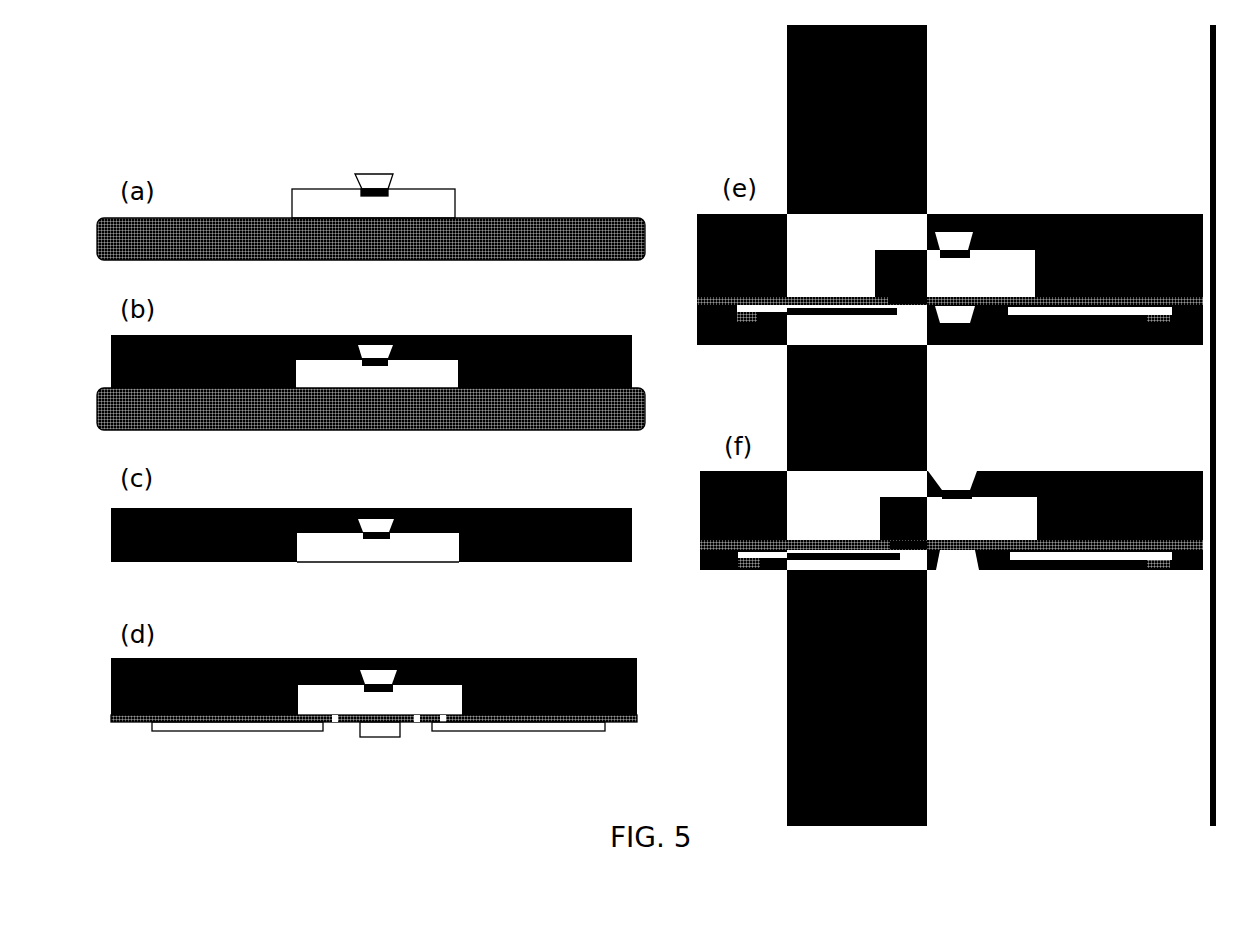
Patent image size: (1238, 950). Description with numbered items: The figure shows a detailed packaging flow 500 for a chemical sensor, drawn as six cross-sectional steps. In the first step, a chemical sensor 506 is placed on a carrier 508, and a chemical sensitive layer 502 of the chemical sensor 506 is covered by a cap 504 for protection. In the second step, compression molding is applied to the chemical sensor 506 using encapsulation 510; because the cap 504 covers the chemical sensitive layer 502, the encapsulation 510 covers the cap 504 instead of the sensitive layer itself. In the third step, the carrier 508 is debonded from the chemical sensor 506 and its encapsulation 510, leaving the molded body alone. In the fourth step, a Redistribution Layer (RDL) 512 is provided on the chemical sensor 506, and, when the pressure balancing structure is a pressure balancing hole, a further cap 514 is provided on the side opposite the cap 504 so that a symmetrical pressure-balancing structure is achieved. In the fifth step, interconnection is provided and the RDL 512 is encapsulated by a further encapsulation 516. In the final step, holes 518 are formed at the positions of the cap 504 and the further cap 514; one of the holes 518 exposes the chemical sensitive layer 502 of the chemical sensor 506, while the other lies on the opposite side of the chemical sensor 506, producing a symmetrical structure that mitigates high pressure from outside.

The packaging flow 500 is at (223, 133).
The chemical sensitive layer 502 is at (364, 186).
The cap 504 is at (378, 186).
The chemical sensor 506 is at (418, 188).
The carrier 508 is at (480, 228).
The encapsulation 510 is at (440, 335).
The Redistribution Layer (RDL) 512 is at (473, 730).
The further cap 514 is at (382, 732).
The further encapsulation 516 is at (1038, 347).
The holes 518 is at (955, 473).